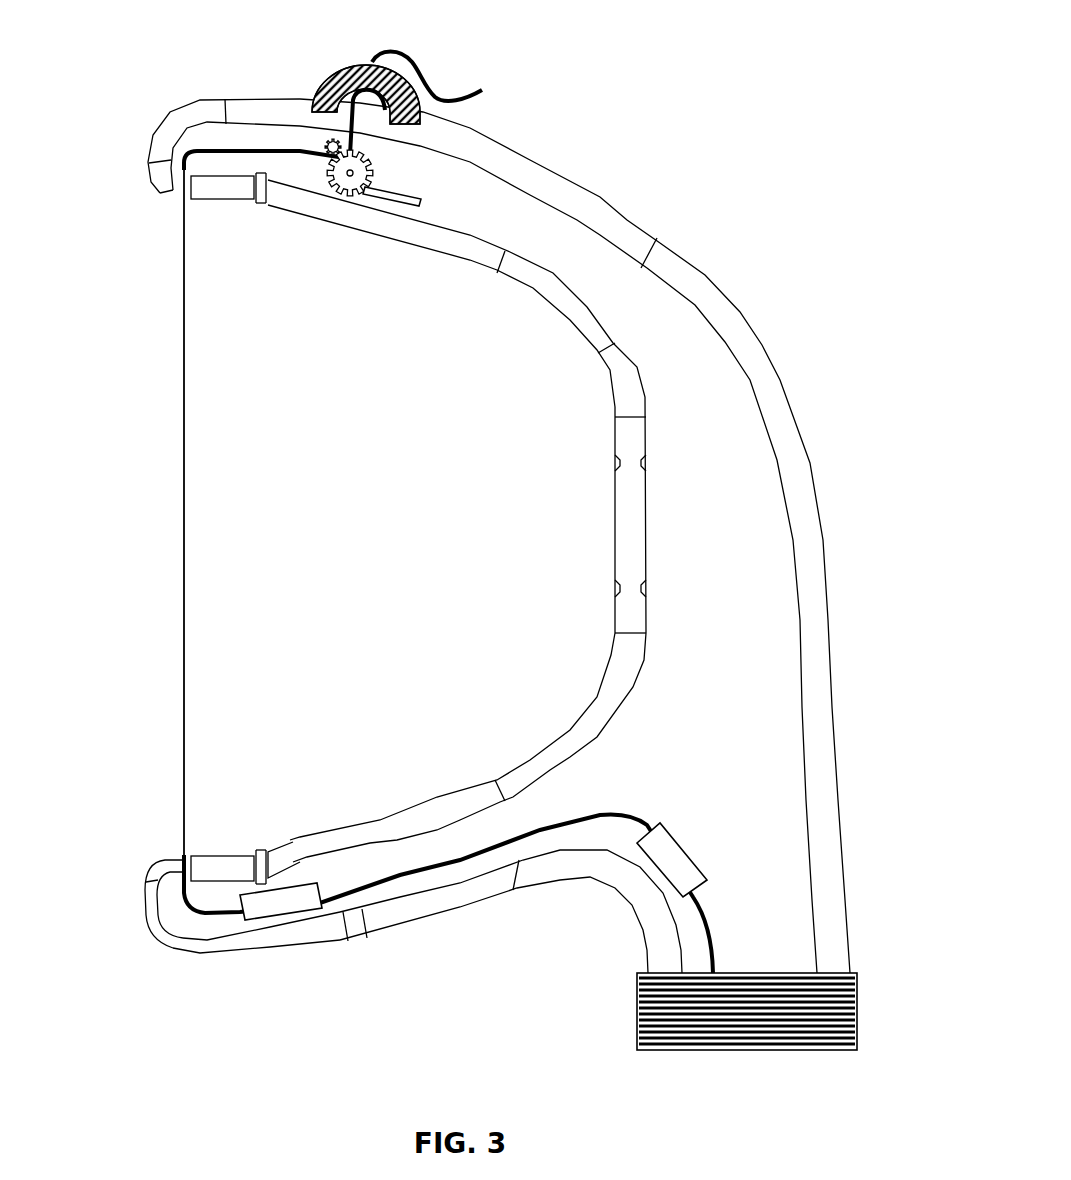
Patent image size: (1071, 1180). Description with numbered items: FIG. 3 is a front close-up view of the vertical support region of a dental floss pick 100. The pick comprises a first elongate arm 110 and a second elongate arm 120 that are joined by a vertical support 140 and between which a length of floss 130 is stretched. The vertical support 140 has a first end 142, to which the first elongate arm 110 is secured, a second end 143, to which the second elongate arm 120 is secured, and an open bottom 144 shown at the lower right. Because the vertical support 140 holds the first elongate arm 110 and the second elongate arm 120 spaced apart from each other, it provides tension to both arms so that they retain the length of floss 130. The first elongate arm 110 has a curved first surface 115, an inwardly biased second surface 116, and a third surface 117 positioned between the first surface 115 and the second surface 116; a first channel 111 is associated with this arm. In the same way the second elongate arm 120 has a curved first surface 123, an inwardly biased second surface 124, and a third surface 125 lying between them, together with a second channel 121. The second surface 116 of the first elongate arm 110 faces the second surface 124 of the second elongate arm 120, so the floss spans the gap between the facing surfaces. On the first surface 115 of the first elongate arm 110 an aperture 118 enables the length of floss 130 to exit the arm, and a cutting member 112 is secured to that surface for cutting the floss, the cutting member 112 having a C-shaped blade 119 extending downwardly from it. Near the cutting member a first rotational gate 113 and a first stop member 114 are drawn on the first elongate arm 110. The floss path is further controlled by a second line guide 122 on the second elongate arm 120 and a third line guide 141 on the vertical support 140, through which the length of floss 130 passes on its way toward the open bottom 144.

The dental floss pick 100 is at (121, 57).
The first elongate arm 110 is at (171, 151).
The first channel 111 is at (170, 197).
The cutting member 112 is at (409, 69).
The first rotational gate 113 is at (380, 165).
The first stop member 114 is at (421, 193).
The first surface 115 is at (598, 190).
The second surface 116 is at (510, 315).
The third surface 117 is at (214, 201).
The aperture 118 is at (333, 118).
The C-shaped blade 119 is at (384, 106).
The second elongate arm 120 is at (132, 933).
The second channel 121 is at (144, 861).
The second line guide 122 is at (243, 905).
The first surface 123 is at (265, 975).
The second surface 124 is at (470, 762).
The third surface 125 is at (204, 846).
The length of floss 130 is at (174, 497).
The vertical support 140 is at (496, 580).
The third line guide 141 is at (702, 850).
The first end 142 is at (700, 239).
The second end 143 is at (520, 907).
The open bottom 144 is at (870, 1040).